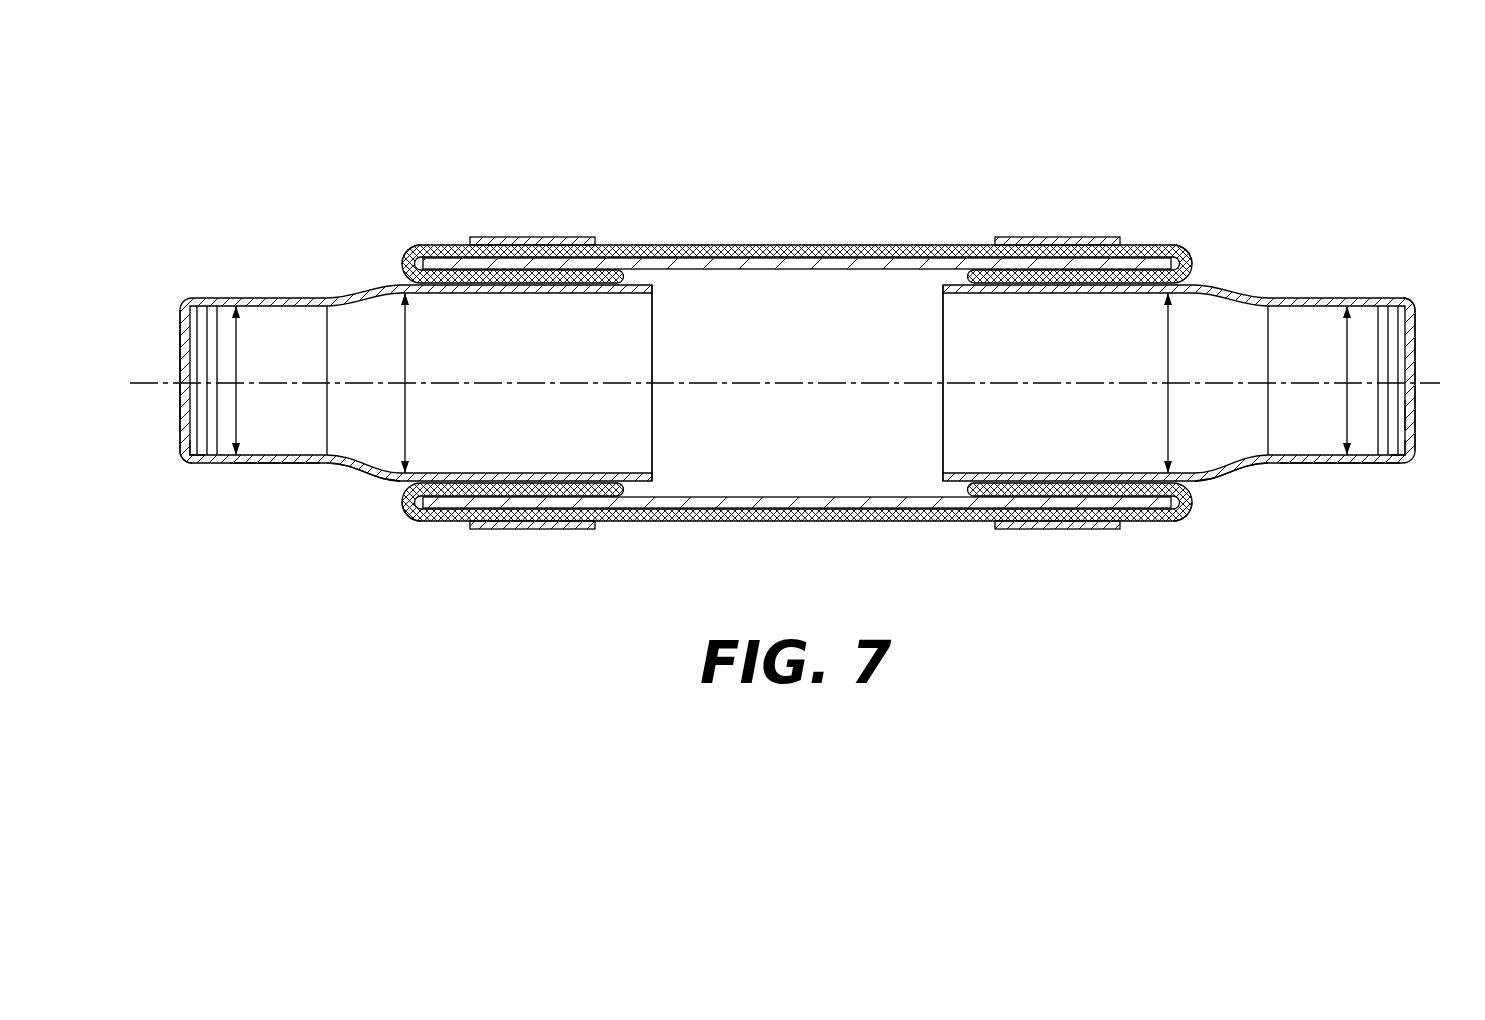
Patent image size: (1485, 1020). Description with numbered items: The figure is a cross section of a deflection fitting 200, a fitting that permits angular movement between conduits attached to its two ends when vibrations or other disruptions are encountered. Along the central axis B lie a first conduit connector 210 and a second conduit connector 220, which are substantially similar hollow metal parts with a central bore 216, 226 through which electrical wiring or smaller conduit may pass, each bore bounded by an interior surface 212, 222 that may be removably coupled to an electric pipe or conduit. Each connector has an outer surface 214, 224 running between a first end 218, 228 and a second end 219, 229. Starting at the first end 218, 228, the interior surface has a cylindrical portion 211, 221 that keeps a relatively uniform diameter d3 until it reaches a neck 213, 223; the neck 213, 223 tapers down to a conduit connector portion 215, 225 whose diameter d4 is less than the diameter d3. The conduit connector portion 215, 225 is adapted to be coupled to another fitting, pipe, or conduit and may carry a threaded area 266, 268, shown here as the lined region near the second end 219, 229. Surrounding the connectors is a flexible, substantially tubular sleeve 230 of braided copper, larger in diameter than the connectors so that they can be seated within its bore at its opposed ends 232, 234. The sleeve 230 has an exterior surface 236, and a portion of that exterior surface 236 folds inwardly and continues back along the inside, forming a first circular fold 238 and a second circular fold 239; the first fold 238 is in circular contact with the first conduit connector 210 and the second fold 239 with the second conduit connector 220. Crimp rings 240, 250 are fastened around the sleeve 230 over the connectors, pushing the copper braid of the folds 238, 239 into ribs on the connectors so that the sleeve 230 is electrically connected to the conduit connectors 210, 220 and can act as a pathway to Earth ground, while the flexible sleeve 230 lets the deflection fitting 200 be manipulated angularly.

The deflection fitting 200 is at (1178, 98).
The first conduit connector 210 is at (1362, 298).
The cylindrical portion 211 is at (1045, 483).
The interior surface 212 is at (1408, 448).
The neck 213 is at (1262, 470).
The outer surface 214 is at (1222, 479).
The conduit connector portion 215 is at (1358, 466).
The central bore 216 is at (1424, 372).
The first end 218 is at (941, 330).
The second end 219 is at (1412, 320).
The second conduit connector 220 is at (358, 289).
The cylindrical portion 221 is at (552, 482).
The interior surface 222 is at (183, 466).
The neck 223 is at (362, 479).
The outer surface 224 is at (398, 484).
The conduit connector portion 225 is at (268, 466).
The central bore 226 is at (168, 340).
The first end 228 is at (654, 340).
The second end 229 is at (181, 396).
The sleeve 230 is at (877, 245).
The opposed end 232 is at (1189, 502).
The opposed end 234 is at (405, 505).
The exterior surface 236 is at (742, 245).
The first circular fold 238 is at (1189, 257).
The second circular fold 239 is at (410, 250).
The crimp ring 240 is at (557, 237).
The crimp ring 250 is at (1046, 237).
The threaded area 266 is at (1406, 417).
The threaded area 268 is at (189, 450).
The diameter of cylindrical portion d3 is at (786, 383).
The diameter of conduit connector portion d4 is at (791, 380).